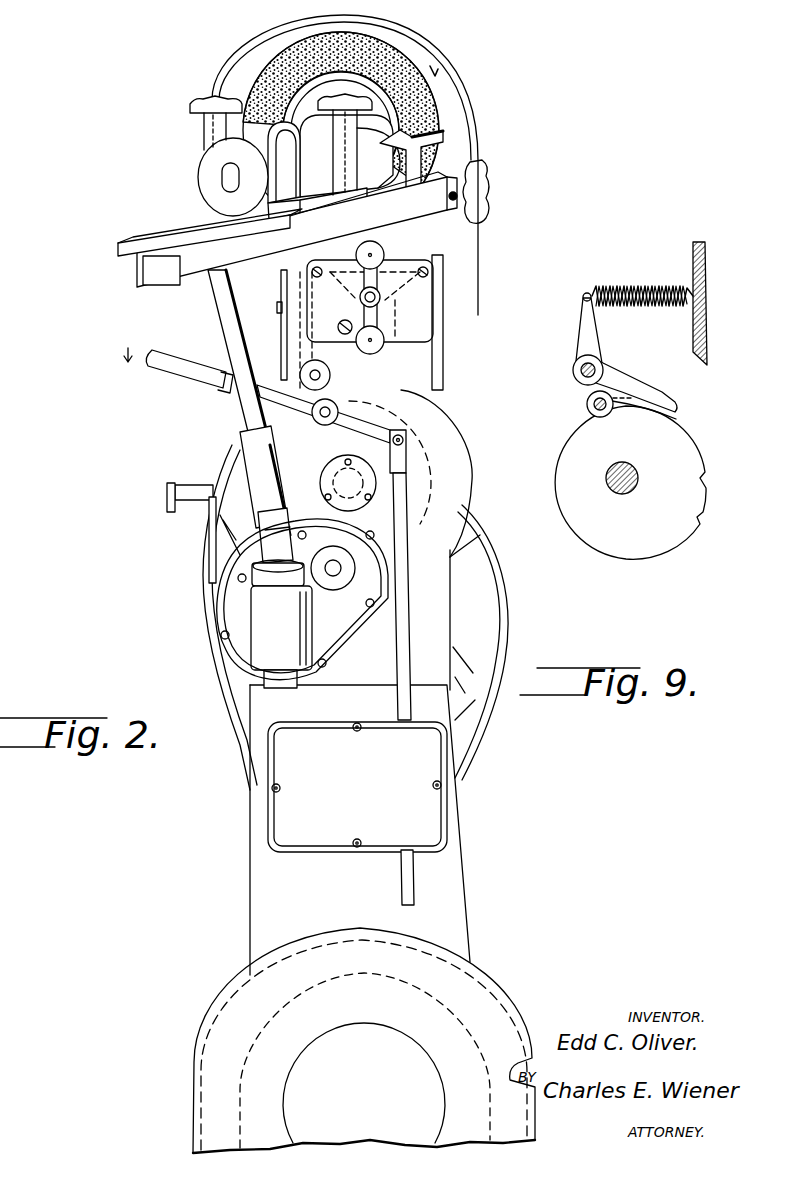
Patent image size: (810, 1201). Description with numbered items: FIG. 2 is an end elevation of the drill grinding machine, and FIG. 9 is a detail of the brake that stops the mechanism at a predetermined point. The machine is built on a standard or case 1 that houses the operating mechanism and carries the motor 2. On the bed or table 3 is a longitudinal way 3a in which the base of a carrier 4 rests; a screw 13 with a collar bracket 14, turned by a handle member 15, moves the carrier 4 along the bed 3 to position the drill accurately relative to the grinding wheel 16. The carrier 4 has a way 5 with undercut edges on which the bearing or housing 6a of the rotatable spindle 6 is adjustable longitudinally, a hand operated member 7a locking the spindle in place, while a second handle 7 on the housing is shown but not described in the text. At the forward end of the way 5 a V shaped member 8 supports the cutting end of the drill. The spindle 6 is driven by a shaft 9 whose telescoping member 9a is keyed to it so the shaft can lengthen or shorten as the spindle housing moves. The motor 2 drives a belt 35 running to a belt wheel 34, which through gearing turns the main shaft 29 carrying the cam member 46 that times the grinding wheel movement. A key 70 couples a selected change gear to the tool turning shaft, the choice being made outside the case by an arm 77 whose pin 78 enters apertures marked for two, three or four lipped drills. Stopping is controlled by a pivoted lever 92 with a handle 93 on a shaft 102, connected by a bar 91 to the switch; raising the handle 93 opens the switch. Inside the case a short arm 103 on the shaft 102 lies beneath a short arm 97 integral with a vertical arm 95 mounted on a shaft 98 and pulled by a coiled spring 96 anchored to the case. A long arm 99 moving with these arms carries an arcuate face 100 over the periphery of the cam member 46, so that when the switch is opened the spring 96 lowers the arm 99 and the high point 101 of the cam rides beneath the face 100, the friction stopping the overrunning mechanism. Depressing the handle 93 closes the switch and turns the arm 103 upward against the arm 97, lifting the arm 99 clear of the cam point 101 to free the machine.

In FIG. 2, the frame 1 is at (453, 862).
In FIG. 9, the frame 1 is at (707, 342).
In FIG. 2, the motor 2 is at (298, 987).
In FIG. 2, the bed 3 is at (355, 325).
In FIG. 2, the longitudinal way 3a is at (338, 326).
In FIG. 2, the carrier 4 is at (297, 229).
In FIG. 2, the way 5 is at (185, 230).
In FIG. 2, the spindle 6 is at (299, 176).
In FIG. 2, the bearing 6a is at (262, 128).
In FIG. 2, the handle 7 is at (210, 103).
In FIG. 2, the hand operated member 7a is at (372, 100).
In FIG. 2, the V shaped member 8 is at (443, 140).
In FIG. 2, the shaft 9 is at (257, 467).
In FIG. 2, the telescoping member 9a is at (213, 302).
In FIG. 2, the screw 13 is at (372, 297).
In FIG. 2, the collar bracket 14 is at (343, 335).
In FIG. 2, the handle member 15 is at (377, 343).
In FIG. 2, the grinding wheel 16 is at (400, 52).
In FIG. 2, the main shaft 29 is at (352, 472).
In FIG. 9, the main shaft 29 is at (640, 468).
In FIG. 2, the belt wheel 34 is at (478, 663).
In FIG. 2, the belt 35 is at (480, 725).
In FIG. 2, the cam member 46 is at (417, 515).
In FIG. 9, the cam member 46 is at (627, 521).
In FIG. 2, the key 70 is at (285, 532).
In FIG. 2, the arm 77 is at (210, 533).
In FIG. 2, the pin 78 is at (167, 493).
In FIG. 2, the bar 91 is at (407, 642).
In FIG. 2, the pivoted lever 92 is at (293, 408).
In FIG. 2, the handle 93 is at (172, 352).
In FIG. 9, the arm 95 is at (592, 330).
In FIG. 9, the coiled spring 96 is at (618, 297).
In FIG. 9, the short arm 97 is at (610, 382).
In FIG. 2, the shaft 98 is at (305, 372).
In FIG. 9, the shaft 98 is at (576, 372).
In FIG. 2, the long arm 99 is at (440, 403).
In FIG. 9, the long arm 99 is at (658, 383).
In FIG. 9, the arcuate face 100 is at (650, 410).
In FIG. 2, the high point 101 is at (430, 460).
In FIG. 9, the high point 101 is at (707, 487).
In FIG. 2, the shaft 102 is at (334, 412).
In FIG. 9, the shaft 102 is at (588, 406).
In FIG. 9, the short arm 103 is at (616, 413).